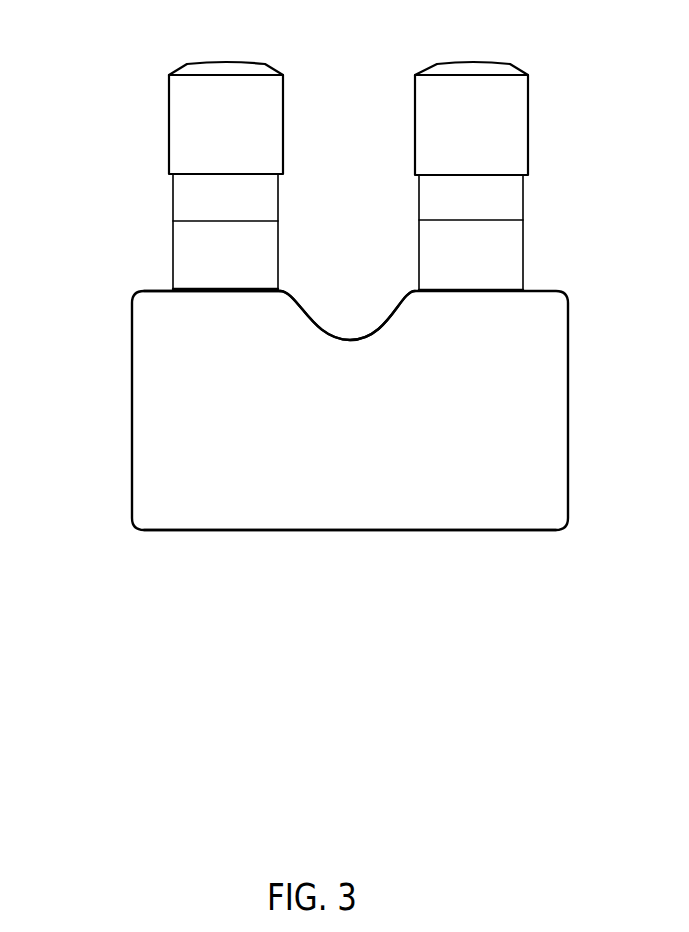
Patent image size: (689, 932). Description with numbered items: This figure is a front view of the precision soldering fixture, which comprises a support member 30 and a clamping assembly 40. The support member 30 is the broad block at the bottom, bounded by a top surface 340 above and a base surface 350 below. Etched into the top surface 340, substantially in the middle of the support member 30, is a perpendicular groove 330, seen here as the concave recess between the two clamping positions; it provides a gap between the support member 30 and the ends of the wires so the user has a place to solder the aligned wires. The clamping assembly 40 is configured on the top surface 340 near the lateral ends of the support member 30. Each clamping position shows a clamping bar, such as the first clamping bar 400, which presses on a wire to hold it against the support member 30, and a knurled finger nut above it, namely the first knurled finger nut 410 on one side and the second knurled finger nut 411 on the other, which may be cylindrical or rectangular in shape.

The support member 30 is at (578, 287).
The perpendicular groove 330 is at (356, 315).
The top surface 340 is at (162, 290).
The base surface 350 is at (280, 531).
The clamping assembly 40 is at (347, 150).
The first clamping bar 400 is at (173, 238).
The first knurled finger nut 410 is at (185, 68).
The second knurled finger nut 411 is at (518, 70).